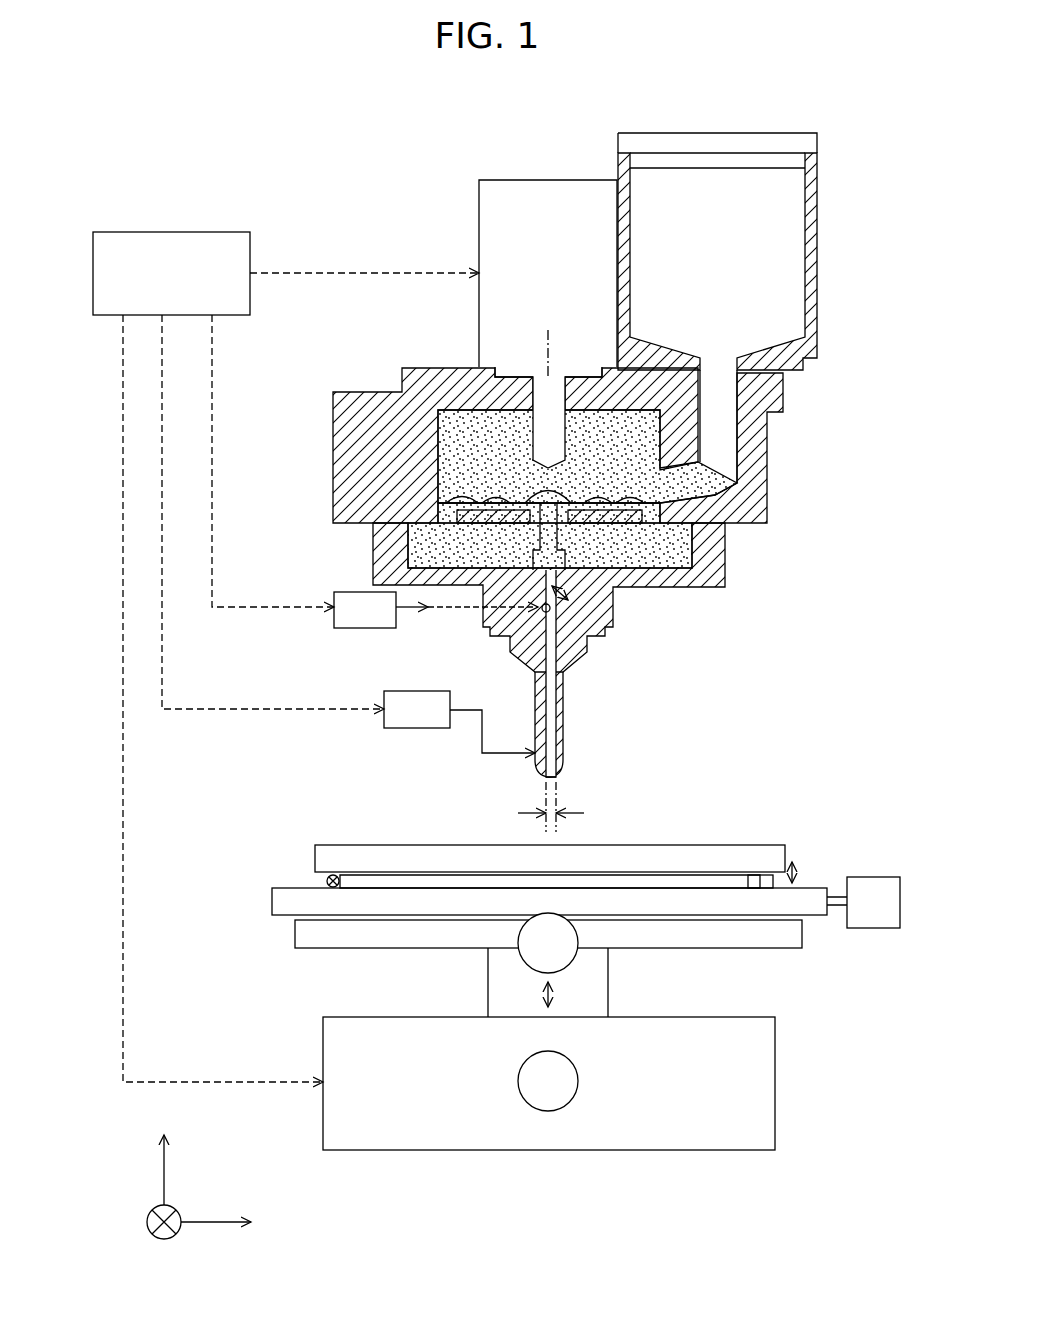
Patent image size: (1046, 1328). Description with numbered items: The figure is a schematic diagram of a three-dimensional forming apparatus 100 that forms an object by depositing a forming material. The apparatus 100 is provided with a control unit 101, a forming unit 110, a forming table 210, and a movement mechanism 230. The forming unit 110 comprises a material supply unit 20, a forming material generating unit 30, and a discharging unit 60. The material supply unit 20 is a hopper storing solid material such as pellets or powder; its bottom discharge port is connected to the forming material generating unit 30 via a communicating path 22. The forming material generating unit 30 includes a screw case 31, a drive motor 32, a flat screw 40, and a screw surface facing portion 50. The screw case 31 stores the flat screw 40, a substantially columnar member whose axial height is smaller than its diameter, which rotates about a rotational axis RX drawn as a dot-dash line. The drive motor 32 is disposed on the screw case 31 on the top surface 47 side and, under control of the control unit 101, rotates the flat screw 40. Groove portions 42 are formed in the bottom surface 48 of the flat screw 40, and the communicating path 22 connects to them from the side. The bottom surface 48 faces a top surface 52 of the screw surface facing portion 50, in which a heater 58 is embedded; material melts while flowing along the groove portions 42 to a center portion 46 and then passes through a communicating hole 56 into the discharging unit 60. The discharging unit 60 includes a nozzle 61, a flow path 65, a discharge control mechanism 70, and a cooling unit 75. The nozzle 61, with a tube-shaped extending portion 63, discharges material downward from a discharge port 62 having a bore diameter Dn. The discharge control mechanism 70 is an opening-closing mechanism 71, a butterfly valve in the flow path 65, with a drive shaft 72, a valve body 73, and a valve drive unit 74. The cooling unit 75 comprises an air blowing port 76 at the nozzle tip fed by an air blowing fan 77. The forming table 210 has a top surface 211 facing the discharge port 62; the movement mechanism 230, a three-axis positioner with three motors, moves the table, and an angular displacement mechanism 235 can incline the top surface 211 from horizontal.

The three-dimensional forming apparatus 100 is at (208, 126).
The control unit 101 is at (156, 231).
The forming unit 110 is at (372, 136).
The forming material generating unit 30 is at (382, 241).
The screw case 31 is at (466, 372).
The drive motor 32 is at (479, 211).
The rotational axis RX is at (545, 346).
The material supply unit 20 is at (819, 241).
The communicating path 22 is at (716, 433).
The flat screw 40 is at (476, 421).
The groove portions 42 is at (500, 506).
The center portion 46 is at (534, 493).
The top surface 47 is at (542, 462).
The bottom surface 48 is at (470, 516).
The screw surface facing portion 50 is at (371, 564).
The top surface 52 is at (373, 525).
The communicating hole 56 is at (727, 568).
The heater 58 is at (700, 548).
The discharging unit 60 is at (760, 657).
The nozzle 61 is at (589, 677).
The discharge port 62 is at (553, 777).
The extending portion 63 is at (564, 723).
The flow path 65 is at (675, 588).
The discharge control mechanism 70 is at (288, 644).
The opening-closing mechanism 71 is at (431, 627).
The drive shaft 72 is at (490, 631).
The valve body 73 is at (512, 651).
The valve drive unit 74 is at (347, 629).
The cooling unit 75 is at (387, 741).
The air blowing port 76 is at (544, 771).
The air blowing fan 77 is at (412, 729).
The bore diameter Dn is at (557, 812).
The forming table 210 is at (726, 857).
The top surface 211 is at (641, 846).
The movement mechanism 230 is at (822, 996).
The angular displacement mechanism 235 is at (808, 878).